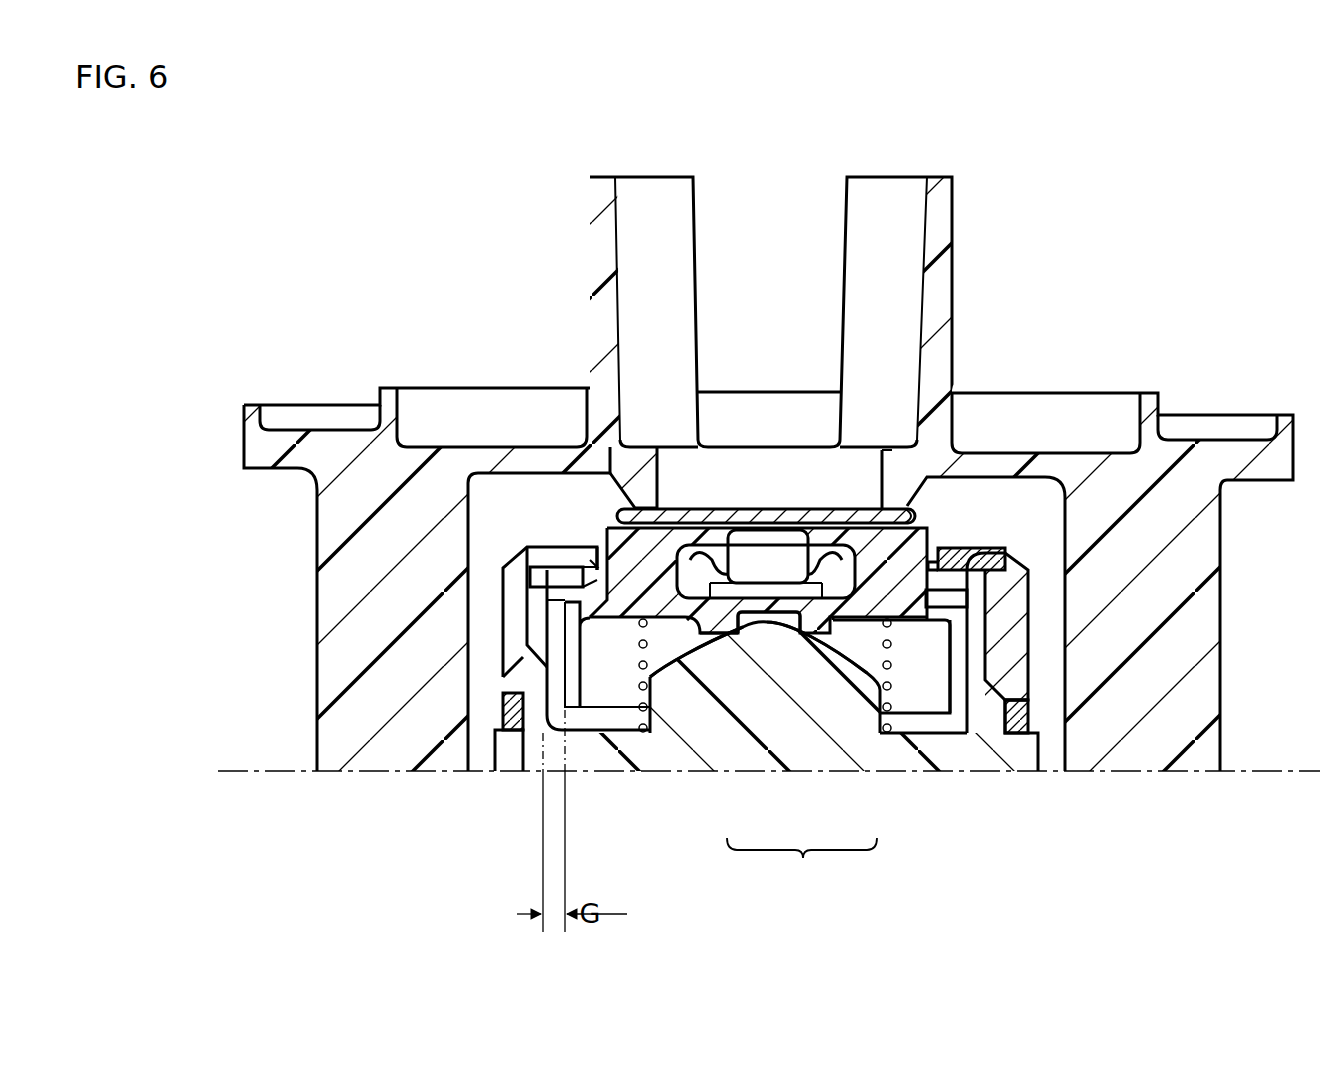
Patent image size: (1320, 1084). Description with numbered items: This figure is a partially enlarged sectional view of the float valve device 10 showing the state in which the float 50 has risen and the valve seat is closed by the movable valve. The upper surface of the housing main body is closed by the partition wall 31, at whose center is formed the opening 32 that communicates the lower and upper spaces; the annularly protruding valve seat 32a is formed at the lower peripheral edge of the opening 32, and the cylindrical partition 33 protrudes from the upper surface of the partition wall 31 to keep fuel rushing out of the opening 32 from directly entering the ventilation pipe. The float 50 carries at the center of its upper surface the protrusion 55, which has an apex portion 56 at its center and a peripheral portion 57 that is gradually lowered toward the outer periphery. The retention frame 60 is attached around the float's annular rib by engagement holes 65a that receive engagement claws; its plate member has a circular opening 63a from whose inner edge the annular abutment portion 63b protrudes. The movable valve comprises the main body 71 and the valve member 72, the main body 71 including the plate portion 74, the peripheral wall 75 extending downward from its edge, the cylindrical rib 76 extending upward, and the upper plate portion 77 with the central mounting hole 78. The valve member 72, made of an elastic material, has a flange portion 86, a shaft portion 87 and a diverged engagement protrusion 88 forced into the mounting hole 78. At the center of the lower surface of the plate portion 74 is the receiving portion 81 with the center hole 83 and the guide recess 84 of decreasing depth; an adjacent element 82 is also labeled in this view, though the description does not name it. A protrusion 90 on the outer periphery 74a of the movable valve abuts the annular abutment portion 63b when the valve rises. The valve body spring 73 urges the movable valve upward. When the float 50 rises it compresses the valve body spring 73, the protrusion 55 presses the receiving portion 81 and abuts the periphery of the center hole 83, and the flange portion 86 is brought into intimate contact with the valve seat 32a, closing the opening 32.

The float valve device 10 is at (1022, 240).
The partition wall 31 is at (540, 455).
The opening 32 is at (878, 458).
The valve seat 32a is at (890, 475).
The partition 33 is at (948, 200).
The float 50 is at (513, 757).
The protrusion 55 is at (800, 747).
The apex portion 56 is at (766, 626).
The peripheral portion 57 is at (832, 630).
The retention frame 60 is at (497, 557).
The opening 63a is at (597, 540).
The annular abutment portion 63b is at (590, 573).
The engagement holes 65a is at (508, 618).
The main body 71 is at (970, 645).
The valve member 72 is at (768, 505).
The valve body spring 73 is at (640, 685).
The plate portion 74 is at (506, 677).
The outer periphery 74a is at (583, 603).
The peripheral wall 75 is at (528, 650).
The cylindrical rib 76 is at (593, 553).
The upper plate portion 77 is at (680, 537).
The mounting hole 78 is at (723, 515).
The receiving portion 81 is at (853, 632).
The rubber seat 82 is at (717, 638).
The center hole 83 is at (878, 675).
The guide recess 84 is at (740, 636).
The flange portion 86 is at (915, 513).
The shaft portion 87 is at (828, 556).
The engagement protrusion 88 is at (1007, 553).
The protrusion 90 is at (958, 598).